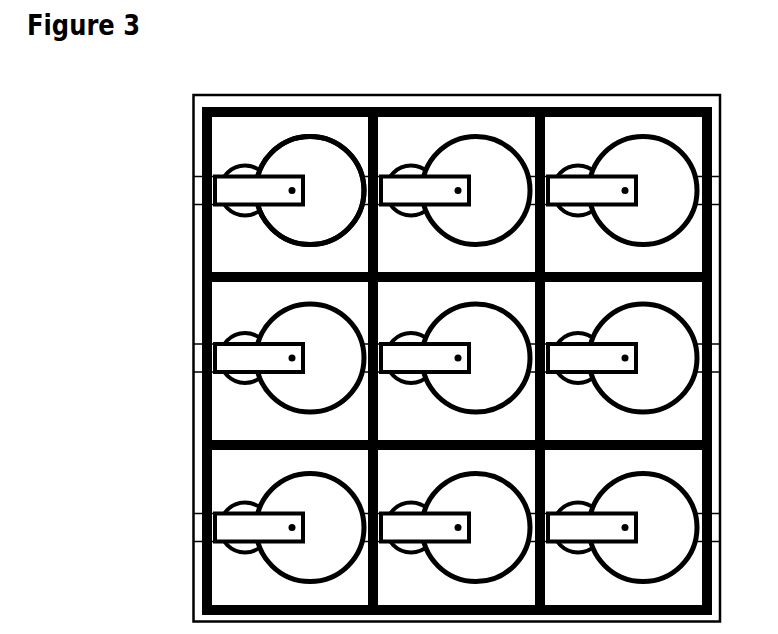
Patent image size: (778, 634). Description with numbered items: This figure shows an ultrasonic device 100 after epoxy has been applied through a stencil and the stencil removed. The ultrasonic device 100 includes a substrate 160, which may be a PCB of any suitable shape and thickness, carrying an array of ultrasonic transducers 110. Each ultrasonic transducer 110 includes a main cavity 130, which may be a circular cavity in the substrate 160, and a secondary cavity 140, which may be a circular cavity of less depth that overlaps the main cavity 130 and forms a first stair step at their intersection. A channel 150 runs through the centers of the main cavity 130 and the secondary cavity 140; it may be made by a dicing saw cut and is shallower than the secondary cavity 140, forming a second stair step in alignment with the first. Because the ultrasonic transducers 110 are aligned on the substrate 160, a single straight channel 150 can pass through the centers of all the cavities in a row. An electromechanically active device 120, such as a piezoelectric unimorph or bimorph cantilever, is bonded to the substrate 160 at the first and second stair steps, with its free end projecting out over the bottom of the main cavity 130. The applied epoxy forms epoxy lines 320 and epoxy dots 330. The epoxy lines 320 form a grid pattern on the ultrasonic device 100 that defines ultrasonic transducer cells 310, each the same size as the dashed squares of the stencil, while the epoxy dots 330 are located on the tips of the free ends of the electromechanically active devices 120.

The ultrasonic device 100 is at (382, 328).
The ultrasonic transducer 110 is at (287, 142).
The electromechanically active device 120 is at (288, 173).
The main cavity 130 is at (270, 225).
The secondary cavity 140 is at (233, 170).
The channel 150 is at (192, 193).
The substrate 160 is at (190, 310).
The ultrasonic transducer cell 310 is at (233, 145).
The epoxy line 320 is at (332, 103).
The epoxy dot 330 is at (289, 192).